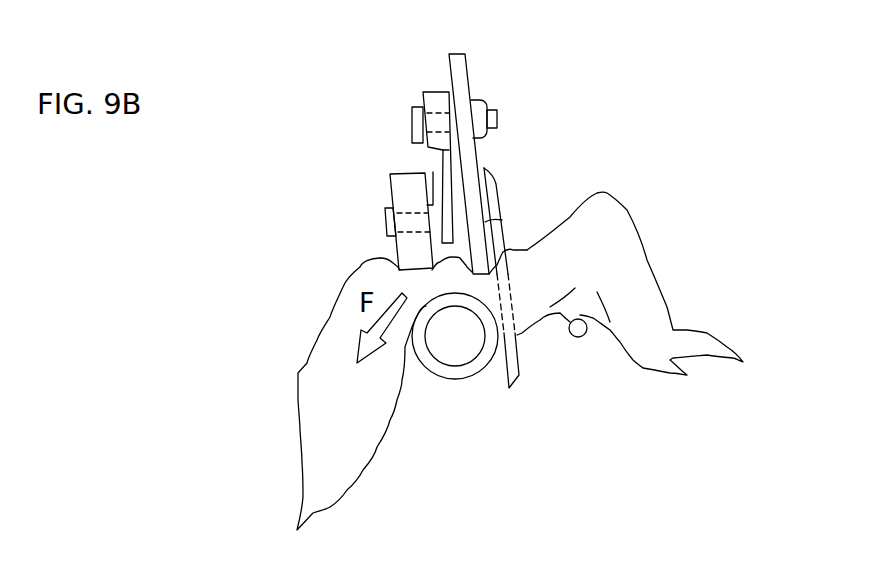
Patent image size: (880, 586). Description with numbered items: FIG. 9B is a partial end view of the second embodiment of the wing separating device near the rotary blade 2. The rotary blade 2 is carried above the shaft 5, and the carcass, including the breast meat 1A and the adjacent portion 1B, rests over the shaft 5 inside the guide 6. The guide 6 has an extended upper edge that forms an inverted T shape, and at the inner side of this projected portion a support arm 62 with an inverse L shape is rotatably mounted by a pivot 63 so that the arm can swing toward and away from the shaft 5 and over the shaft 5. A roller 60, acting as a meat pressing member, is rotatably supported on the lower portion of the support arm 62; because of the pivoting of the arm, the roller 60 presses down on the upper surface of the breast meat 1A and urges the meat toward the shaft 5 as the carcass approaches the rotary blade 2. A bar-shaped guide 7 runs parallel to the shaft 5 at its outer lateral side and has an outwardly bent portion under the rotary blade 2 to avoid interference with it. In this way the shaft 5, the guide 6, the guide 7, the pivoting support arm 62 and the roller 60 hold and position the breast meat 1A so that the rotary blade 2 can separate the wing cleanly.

The breast meat 1A is at (362, 445).
The second housing half 1B is at (627, 220).
The rotary blade 2 is at (502, 180).
The shaft 5 is at (458, 383).
The guide 6 is at (502, 219).
The guide 7 is at (578, 338).
The roller 60 is at (381, 182).
The support arm 62 is at (432, 170).
The bolt 63 is at (473, 98).